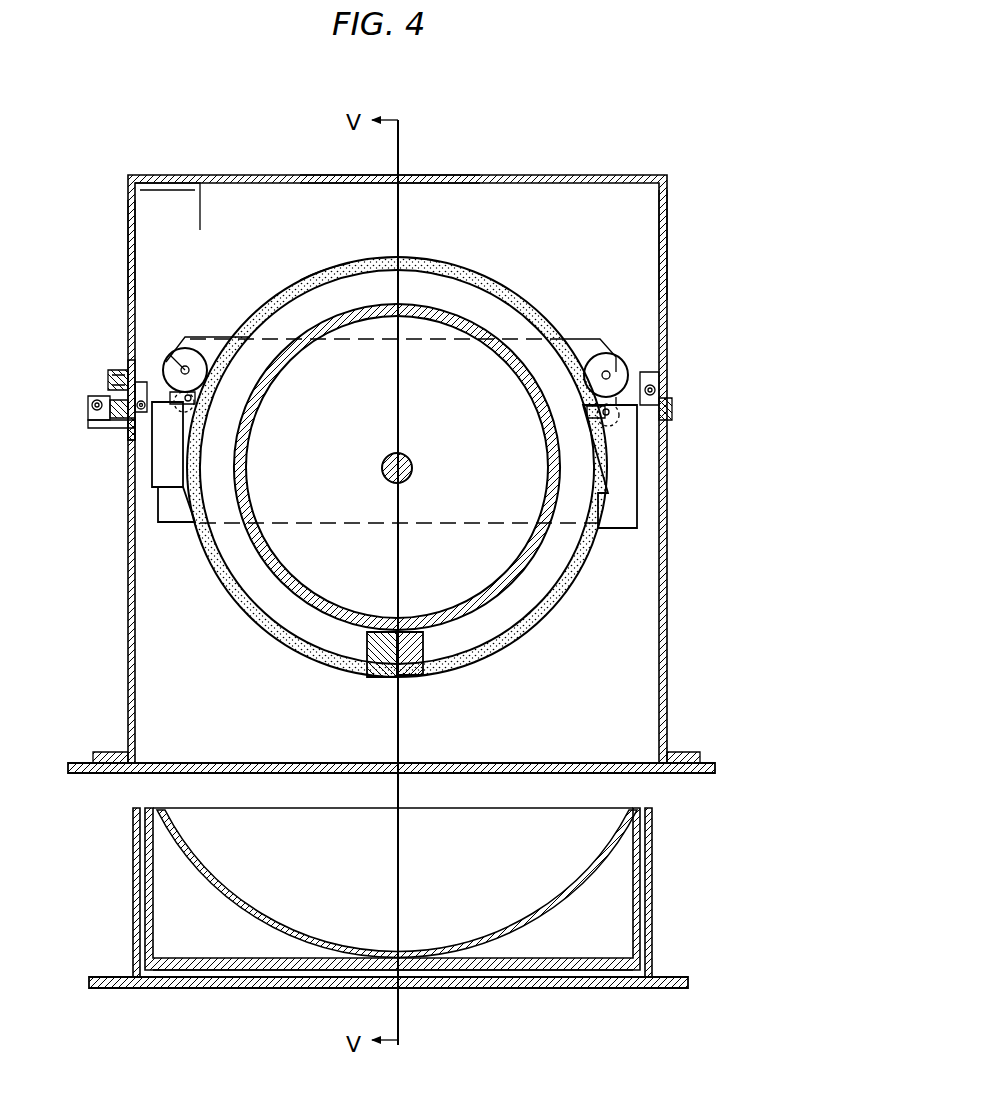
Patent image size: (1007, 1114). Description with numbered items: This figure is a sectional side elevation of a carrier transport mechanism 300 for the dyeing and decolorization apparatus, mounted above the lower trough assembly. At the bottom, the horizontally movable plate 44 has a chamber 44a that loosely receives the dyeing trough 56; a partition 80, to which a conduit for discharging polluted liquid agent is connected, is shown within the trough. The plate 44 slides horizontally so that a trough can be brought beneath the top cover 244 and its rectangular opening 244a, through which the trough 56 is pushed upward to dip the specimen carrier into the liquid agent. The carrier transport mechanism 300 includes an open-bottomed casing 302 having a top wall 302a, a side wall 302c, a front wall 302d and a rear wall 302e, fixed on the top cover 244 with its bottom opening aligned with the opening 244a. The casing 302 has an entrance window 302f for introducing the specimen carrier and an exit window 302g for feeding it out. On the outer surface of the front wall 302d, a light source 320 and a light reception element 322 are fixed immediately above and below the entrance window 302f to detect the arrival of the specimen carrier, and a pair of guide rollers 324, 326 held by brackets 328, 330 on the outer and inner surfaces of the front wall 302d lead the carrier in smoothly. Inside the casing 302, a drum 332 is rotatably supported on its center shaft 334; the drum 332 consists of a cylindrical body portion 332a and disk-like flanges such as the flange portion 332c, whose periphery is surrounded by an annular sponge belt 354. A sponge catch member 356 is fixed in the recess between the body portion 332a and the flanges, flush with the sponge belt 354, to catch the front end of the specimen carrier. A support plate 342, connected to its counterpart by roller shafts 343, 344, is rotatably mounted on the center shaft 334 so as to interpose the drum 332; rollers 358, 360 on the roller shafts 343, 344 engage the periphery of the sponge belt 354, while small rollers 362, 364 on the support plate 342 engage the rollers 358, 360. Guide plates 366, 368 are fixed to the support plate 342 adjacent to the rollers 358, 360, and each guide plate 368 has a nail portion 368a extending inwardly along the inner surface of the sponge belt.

The carrier transport mechanism 300 is at (500, 140).
The open-bottomed casing 302 is at (535, 178).
The top wall 302a is at (262, 176).
The side wall 302c is at (175, 192).
The front wall 302d is at (127, 215).
The rear wall 302e is at (668, 205).
The entrance window 302f is at (110, 396).
The exit window 302g is at (662, 412).
The light source 320 is at (118, 372).
The light reception element 322 is at (126, 440).
The guide roller 324 is at (92, 418).
The guide roller 326 is at (162, 508).
The bracket 328 is at (115, 420).
The bracket 330 is at (142, 382).
The drum 332 is at (470, 262).
The cylindrical body portion 332a is at (282, 330).
The flange portion 332c is at (418, 278).
The center shaft 334 is at (408, 460).
The support plate 342 is at (200, 362).
The roller shaft 343 is at (184, 368).
The roller shaft 344 is at (607, 375).
The annular sponge belt 354 is at (352, 262).
The bottom block 356 is at (412, 678).
The rollers 358 is at (190, 345).
The rollers 360 is at (598, 360).
The small rollers 362 is at (200, 410).
The small rollers 364 is at (660, 418).
The guide plates 366 is at (178, 455).
The guide plates 368 is at (625, 470).
The nail portion 368a is at (590, 408).
The top cover 244 is at (690, 774).
The rectangular opening 244a is at (230, 762).
The dyeing trough 56 is at (646, 880).
The partition 80 is at (562, 905).
The horizontally movable plate 44 is at (572, 990).
The chamber 44a is at (412, 990).